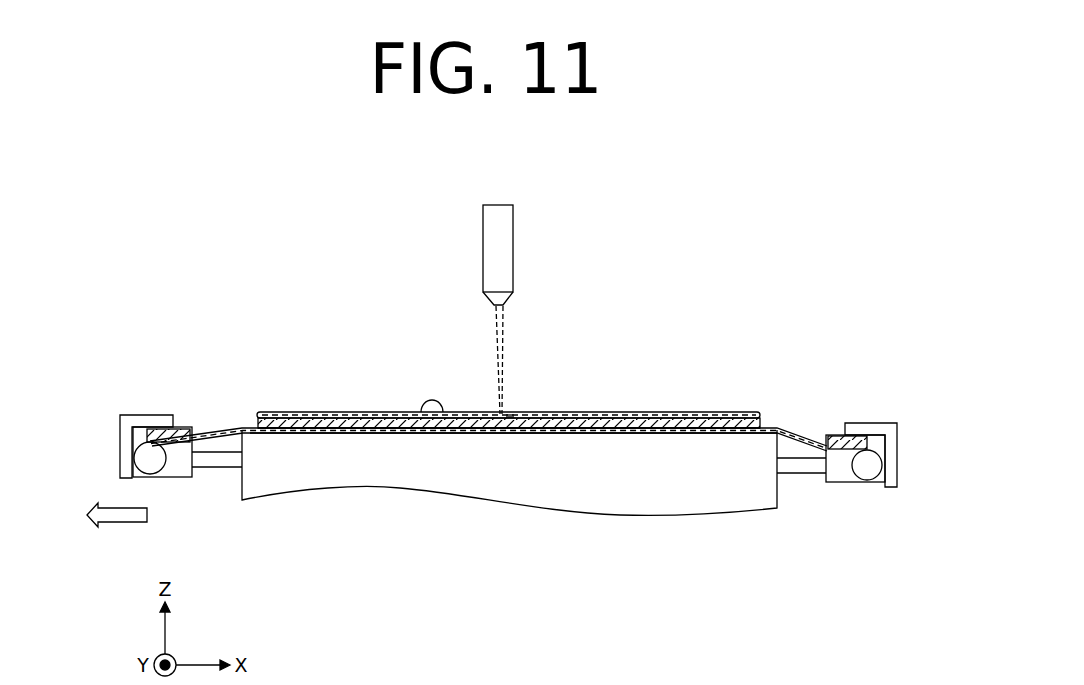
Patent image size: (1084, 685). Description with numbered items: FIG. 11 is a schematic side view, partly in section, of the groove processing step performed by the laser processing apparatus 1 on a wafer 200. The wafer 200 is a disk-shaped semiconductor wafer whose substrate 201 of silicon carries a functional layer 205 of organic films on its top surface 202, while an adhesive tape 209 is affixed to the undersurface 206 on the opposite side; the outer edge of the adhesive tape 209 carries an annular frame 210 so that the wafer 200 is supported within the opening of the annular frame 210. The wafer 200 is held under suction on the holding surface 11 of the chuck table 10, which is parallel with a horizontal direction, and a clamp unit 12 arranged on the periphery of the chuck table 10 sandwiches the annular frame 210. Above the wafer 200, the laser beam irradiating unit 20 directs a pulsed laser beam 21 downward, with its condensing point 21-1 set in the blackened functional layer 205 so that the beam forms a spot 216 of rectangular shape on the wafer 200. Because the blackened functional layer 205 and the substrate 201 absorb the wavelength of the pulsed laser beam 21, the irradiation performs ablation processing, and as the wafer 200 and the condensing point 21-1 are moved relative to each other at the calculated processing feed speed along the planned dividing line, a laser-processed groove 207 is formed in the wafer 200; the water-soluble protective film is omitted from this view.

The laser processing apparatus 1 is at (365, 204).
The chuck table 10 is at (560, 512).
The holding surface 11 is at (432, 413).
The clamp unit 12 is at (178, 477).
The laser beam irradiating unit 20 is at (524, 248).
The pulsed laser beam 21 is at (505, 342).
The condensing point 21-1 is at (517, 407).
The spot 216 is at (578, 385).
The wafer 200 is at (499, 434).
The substrate 201 is at (647, 428).
The top surface 202 is at (710, 430).
The functional layer 205 is at (672, 417).
The undersurface 206 is at (720, 430).
The laser-processed groove 207 is at (382, 417).
The adhesive tape 209 is at (800, 430).
The annular frame 210 is at (857, 423).